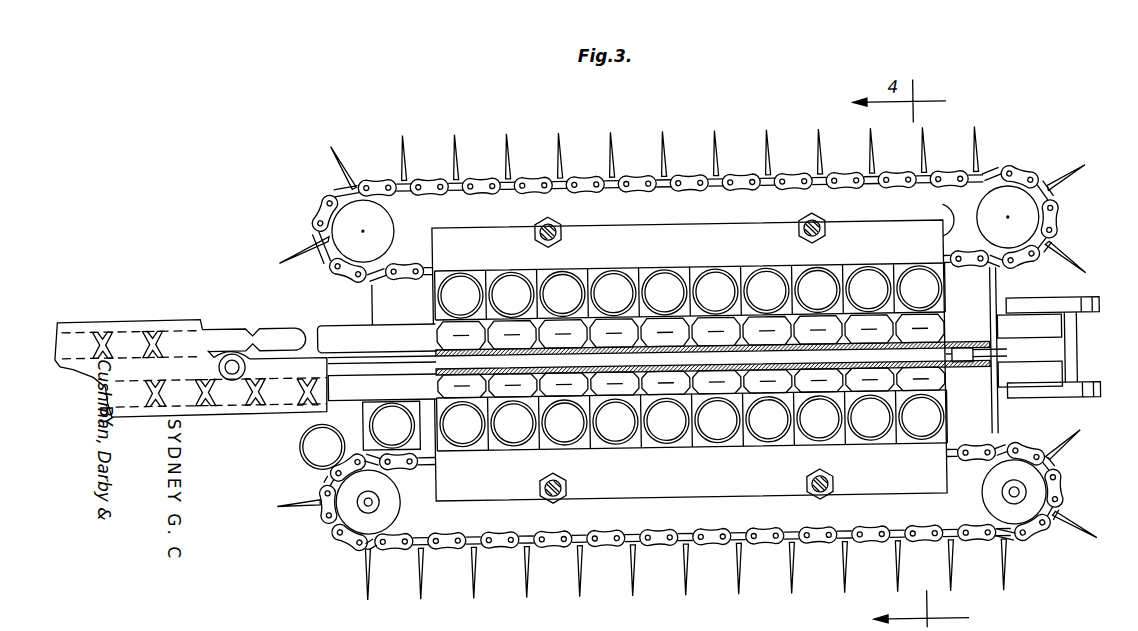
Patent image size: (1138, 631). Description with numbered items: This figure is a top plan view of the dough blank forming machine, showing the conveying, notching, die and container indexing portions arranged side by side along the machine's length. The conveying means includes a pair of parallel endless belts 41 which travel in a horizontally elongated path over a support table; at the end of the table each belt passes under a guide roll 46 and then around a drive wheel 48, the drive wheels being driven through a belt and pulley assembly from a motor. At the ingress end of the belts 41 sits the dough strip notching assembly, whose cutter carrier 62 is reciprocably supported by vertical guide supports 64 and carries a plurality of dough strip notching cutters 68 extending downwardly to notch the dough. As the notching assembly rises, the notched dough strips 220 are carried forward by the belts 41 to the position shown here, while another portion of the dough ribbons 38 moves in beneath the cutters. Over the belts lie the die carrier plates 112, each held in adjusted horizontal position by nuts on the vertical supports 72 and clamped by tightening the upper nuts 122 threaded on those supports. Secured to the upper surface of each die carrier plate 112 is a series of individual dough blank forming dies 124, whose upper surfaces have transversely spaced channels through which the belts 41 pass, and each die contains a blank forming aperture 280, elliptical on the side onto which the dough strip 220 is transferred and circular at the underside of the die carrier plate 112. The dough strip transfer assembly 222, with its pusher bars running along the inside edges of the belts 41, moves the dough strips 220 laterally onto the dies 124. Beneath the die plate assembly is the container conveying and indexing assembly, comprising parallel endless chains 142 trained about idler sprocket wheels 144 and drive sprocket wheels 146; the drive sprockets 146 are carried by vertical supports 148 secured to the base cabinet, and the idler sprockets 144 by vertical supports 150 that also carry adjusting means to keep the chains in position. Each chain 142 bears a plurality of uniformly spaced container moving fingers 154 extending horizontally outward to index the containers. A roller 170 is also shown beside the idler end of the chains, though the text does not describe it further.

The dough ribbons 38 is at (276, 316).
The endless belts 41 is at (336, 344).
The guide roll 46 is at (1004, 328).
The drive wheel 48 is at (1080, 348).
The cutter carrier 62 is at (174, 312).
The vertical guide supports 64 is at (240, 364).
The dough strip notching cutters 68 is at (111, 324).
The vertical support 72 is at (805, 224).
The die carrier plate 112 is at (657, 250).
The upper nuts 122 is at (824, 223).
The dough blank forming dies 124 is at (455, 270).
The endless chains 142 is at (320, 216).
The idler sprocket wheels 144 is at (347, 227).
The drive sprocket wheels 146 is at (1022, 227).
The vertical supports 148 is at (1013, 502).
The vertical supports 150 is at (375, 502).
The container moving fingers 154 is at (338, 168).
The roller 170 is at (300, 455).
The dough strips 220 is at (436, 336).
The dough strip transfer assembly 222 is at (940, 341).
The blank forming aperture 280 is at (469, 428).